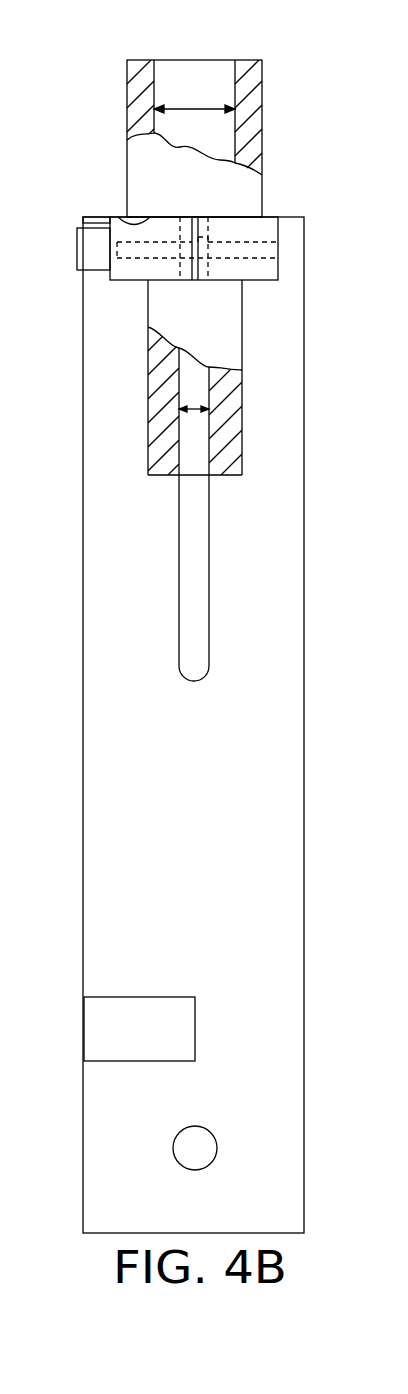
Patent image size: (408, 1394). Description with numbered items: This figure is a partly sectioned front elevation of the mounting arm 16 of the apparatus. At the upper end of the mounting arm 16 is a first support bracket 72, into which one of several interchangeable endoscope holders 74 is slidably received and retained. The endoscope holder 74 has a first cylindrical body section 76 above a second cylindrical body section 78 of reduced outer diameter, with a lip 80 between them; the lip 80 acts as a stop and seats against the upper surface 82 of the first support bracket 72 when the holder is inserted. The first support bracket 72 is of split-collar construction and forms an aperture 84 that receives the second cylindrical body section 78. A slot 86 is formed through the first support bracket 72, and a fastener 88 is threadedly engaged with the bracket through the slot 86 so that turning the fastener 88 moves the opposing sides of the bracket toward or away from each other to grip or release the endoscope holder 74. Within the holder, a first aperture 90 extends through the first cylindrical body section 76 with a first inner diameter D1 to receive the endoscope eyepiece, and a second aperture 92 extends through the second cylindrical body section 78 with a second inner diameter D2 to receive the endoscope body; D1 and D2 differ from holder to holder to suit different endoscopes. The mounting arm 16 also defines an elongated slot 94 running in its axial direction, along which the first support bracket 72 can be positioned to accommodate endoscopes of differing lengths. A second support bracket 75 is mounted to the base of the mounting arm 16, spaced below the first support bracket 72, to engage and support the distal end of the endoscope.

The mounting arm 16 is at (298, 107).
The first support bracket 72 is at (83, 220).
The endoscope holder 74 is at (248, 60).
The second support bracket 75 is at (117, 997).
The first cylindrical body section 76 is at (263, 192).
The second cylindrical body section 78 is at (148, 440).
The lip 80 is at (118, 217).
The upper surface 82 is at (158, 217).
The aperture 84 is at (245, 217).
The slot 86 is at (192, 280).
The fastener 88 is at (77, 243).
The first aperture 90 is at (155, 85).
The second aperture 92 is at (210, 447).
The slot 94 is at (180, 545).
The first inner diameter D1 is at (175, 113).
The second inner diameter D2 is at (198, 405).